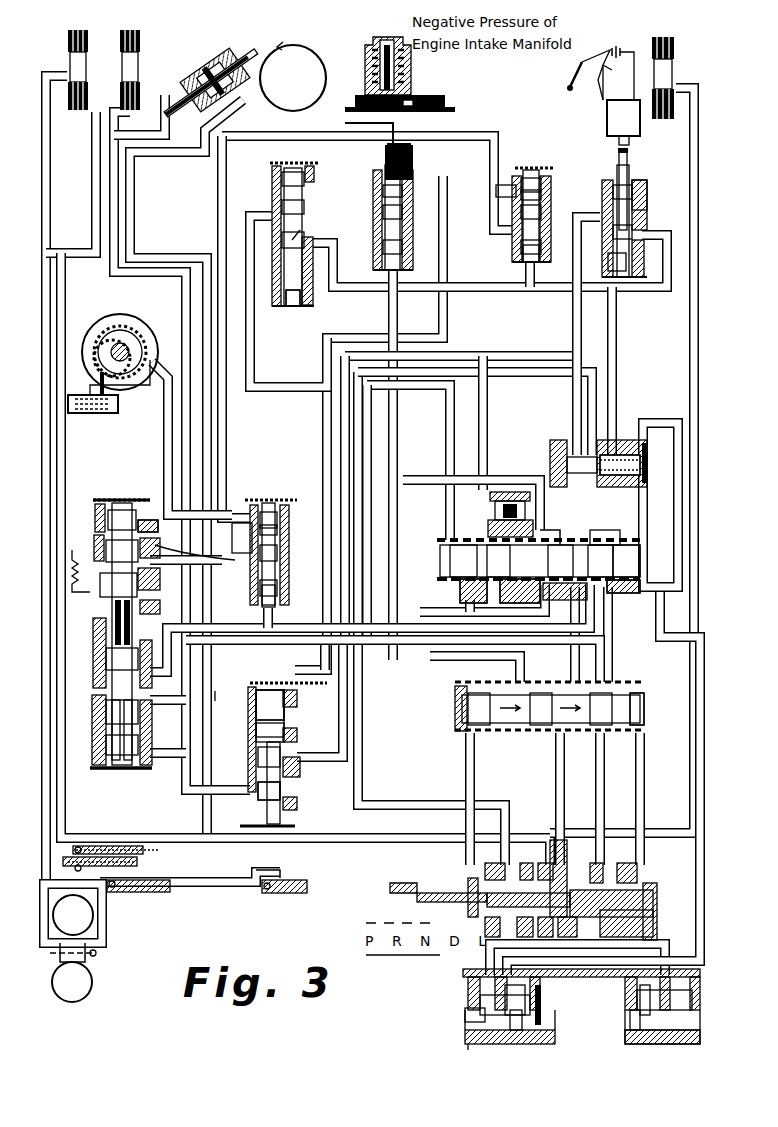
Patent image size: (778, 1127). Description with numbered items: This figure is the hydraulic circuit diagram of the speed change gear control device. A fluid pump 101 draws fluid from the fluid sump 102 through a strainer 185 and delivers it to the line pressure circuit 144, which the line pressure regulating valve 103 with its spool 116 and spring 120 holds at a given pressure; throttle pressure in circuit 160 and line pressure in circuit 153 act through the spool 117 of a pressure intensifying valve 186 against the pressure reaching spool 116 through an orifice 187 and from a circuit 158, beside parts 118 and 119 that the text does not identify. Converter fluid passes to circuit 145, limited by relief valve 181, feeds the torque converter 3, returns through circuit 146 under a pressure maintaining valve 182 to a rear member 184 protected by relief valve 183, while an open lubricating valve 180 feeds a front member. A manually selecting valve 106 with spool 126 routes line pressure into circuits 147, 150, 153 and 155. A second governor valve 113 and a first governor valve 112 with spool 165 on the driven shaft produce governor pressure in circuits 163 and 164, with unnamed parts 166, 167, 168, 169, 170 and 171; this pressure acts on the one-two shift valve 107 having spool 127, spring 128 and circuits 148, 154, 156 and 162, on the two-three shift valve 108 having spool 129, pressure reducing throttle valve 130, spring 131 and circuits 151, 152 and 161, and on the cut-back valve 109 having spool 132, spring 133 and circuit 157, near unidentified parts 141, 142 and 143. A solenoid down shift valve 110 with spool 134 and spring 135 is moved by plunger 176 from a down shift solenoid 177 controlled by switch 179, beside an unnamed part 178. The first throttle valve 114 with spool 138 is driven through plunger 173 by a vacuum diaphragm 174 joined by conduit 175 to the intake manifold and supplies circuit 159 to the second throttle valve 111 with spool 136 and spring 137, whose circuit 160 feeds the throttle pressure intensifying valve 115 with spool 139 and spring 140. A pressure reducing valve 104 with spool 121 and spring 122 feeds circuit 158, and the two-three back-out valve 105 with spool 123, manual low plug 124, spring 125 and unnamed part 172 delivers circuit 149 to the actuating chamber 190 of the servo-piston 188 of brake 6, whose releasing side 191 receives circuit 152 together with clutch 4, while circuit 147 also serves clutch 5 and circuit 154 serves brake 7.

The torque converter 3 is at (95, 971).
The clutch 4 is at (66, 43).
The clutch 5 is at (118, 43).
The brake 6 is at (312, 52).
The brake 7 is at (672, 35).
The fluid pump 101 is at (112, 322).
The fluid sump 102 is at (92, 415).
The line pressure regulating valve 103 is at (122, 498).
The pressure reducing valve 104 is at (268, 498).
The 2.3 back-out valve 105 is at (255, 829).
The manually selecting valve 106 is at (388, 899).
The 1.2 shift valve 107 is at (645, 690).
The 2.3 shift valve 108 is at (682, 557).
The cut-back valve 109 is at (649, 463).
The solenoid down shift valve 110 is at (614, 168).
The second throttle valve 111 is at (542, 167).
The first governor valve 112 is at (628, 1021).
The second governor valve 113 is at (540, 1011).
The first throttle valve 114 is at (414, 160).
The throttle pressure intensifying valve 115 is at (284, 166).
The spool 116 is at (108, 498).
The spool 117 is at (118, 771).
The spool 118 is at (135, 771).
The spring 119 is at (130, 661).
The spring 120 is at (125, 641).
The spool 121 is at (282, 523).
The spring 122 is at (280, 588).
The spool 123 is at (283, 796).
The manual low plug 124 is at (280, 709).
The spring 125 is at (280, 731).
The spool 126 is at (470, 878).
The spool 127 is at (636, 728).
The spring 128 is at (453, 799).
The spool 129 is at (623, 594).
The pressure reducing throttle valve 130 is at (462, 583).
The spring 131 is at (520, 592).
The spool 132 is at (555, 463).
The spring 133 is at (612, 478).
The spool 134 is at (647, 184).
The spring 135 is at (628, 267).
The spool 136 is at (545, 191).
The spring 137 is at (542, 252).
The spool 138 is at (413, 184).
The spool 139 is at (306, 233).
The spring 140 is at (300, 318).
The plug 141 is at (512, 495).
The ball 142 is at (500, 490).
The passage 143 is at (545, 528).
The line pressure circuit 144 is at (333, 251).
The circuit 145 is at (74, 560).
The circuit 146 is at (104, 931).
The line pressure circuit 147 is at (90, 181).
The circuit 148 is at (520, 652).
The line pressure circuit 149 is at (168, 113).
The circuit 150 is at (452, 492).
The line pressure circuit 151 is at (605, 533).
The circuit 152 is at (47, 133).
The line pressure circuit 153 is at (656, 420).
The circuit 154 is at (694, 78).
The circuit 155 is at (422, 476).
The line pressure circuit 156 is at (580, 215).
The circuit 157 is at (585, 406).
The pressure circuit 158 is at (155, 518).
The throttle system circuit 159 is at (504, 160).
The throttle system circuit 160 is at (222, 440).
The throttle system pressure circuit 161 is at (262, 214).
The throttle system circuit 162 is at (615, 649).
The circuit 163 is at (578, 977).
The circuit 164 is at (690, 641).
The spool 165 is at (636, 1046).
The spool 166 is at (640, 1011).
The plug 167 is at (465, 1017).
The spring 168 is at (525, 1036).
The spool 169 is at (540, 1026).
The valve body 170 is at (662, 1046).
The valve body 171 is at (470, 1047).
The passage 172 is at (215, 701).
The plunger 173 is at (385, 153).
The vacuum diaphragm 174 is at (345, 124).
The conduit 175 is at (395, 34).
The plunger 176 is at (630, 154).
The down shift solenoid 177 is at (643, 123).
The lever 178 is at (601, 95).
The switch 179 is at (606, 56).
The open lubricating valve 180 is at (145, 849).
The relief valve 181 is at (140, 865).
The pressure maintaining valve 182 is at (145, 893).
The relief valve 183 is at (288, 894).
The rear member to be lubricated 184 is at (282, 879).
The strainer 185 is at (118, 406).
The pressure intensifying valve 186 is at (110, 776).
The orifice 187 is at (185, 556).
The servo-piston 188 is at (203, 58).
The actuating chamber 190 is at (200, 58).
The releasing side 191 is at (245, 102).